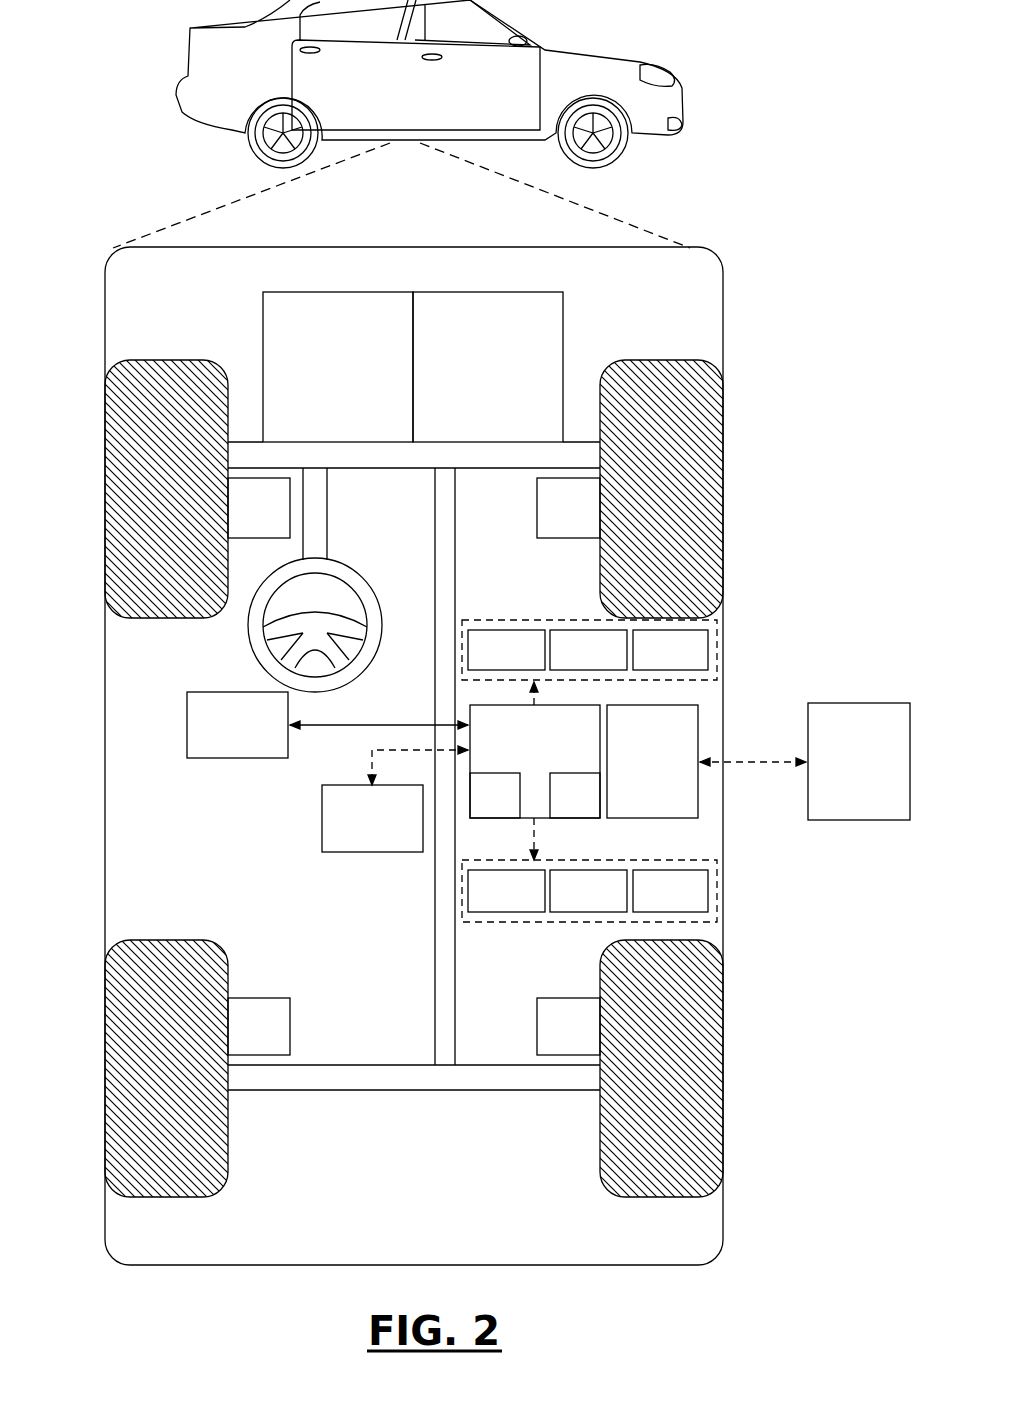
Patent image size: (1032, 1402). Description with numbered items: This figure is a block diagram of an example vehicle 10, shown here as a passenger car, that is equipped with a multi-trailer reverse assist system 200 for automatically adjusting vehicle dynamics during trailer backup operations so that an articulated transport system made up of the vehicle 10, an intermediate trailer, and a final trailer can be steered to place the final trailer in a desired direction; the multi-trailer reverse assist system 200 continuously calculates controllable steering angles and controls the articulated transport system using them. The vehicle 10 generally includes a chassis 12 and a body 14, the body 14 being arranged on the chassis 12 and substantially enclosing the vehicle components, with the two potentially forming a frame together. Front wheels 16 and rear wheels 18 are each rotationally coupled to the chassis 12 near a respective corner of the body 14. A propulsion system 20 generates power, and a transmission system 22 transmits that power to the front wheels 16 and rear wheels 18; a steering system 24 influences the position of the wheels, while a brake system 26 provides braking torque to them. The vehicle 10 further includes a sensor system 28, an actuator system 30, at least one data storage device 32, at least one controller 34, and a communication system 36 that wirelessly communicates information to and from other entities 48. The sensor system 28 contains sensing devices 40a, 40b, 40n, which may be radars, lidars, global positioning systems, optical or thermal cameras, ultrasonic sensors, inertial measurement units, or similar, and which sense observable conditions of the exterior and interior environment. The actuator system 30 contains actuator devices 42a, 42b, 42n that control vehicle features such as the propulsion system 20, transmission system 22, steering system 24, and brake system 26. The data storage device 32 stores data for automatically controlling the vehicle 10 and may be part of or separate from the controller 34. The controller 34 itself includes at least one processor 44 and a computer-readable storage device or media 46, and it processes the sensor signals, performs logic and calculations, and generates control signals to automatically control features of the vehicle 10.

The vehicle 10 is at (178, 77).
The chassis 12 is at (432, 906).
The body 14 is at (104, 717).
The front wheels 16 is at (165, 358).
The rear wheels 18 is at (170, 1197).
The propulsion system 20 is at (322, 380).
The transmission system 22 is at (472, 380).
The steering system 24 is at (333, 536).
The brake system 26 is at (243, 522).
The sensor system 28 is at (548, 620).
The actuator system 30 is at (552, 925).
The data storage device 32 is at (356, 832).
The controller 34 is at (519, 756).
The communication system 36 is at (636, 776).
The sensing device 40a is at (483, 664).
The sensing device 40b is at (565, 664).
The sensing device 40n is at (647, 664).
The actuator device 42a is at (483, 905).
The actuator device 42b is at (565, 905).
The actuator device 42n is at (647, 905).
The processor 44 is at (479, 810).
The computer-readable storage device or media 46 is at (559, 810).
The other entities 48 is at (842, 776).
The multi-trailer reverse assist system 200 is at (213, 739).